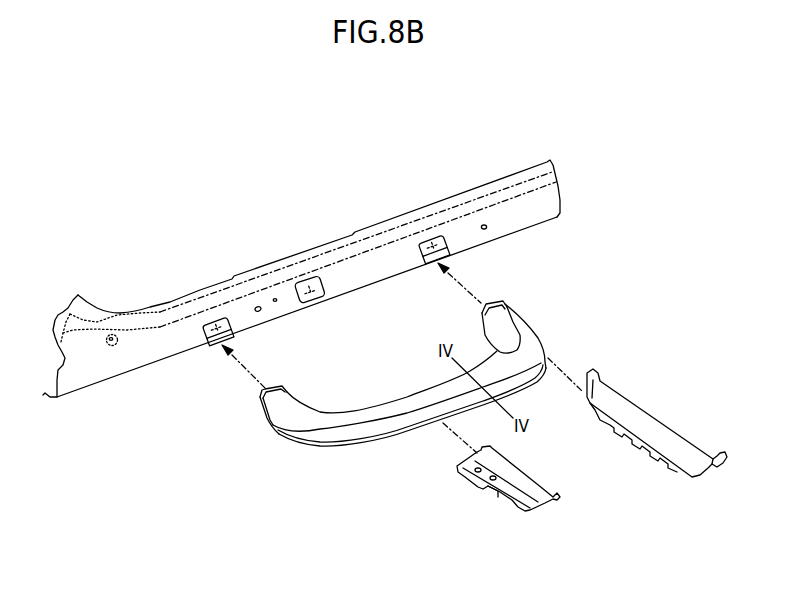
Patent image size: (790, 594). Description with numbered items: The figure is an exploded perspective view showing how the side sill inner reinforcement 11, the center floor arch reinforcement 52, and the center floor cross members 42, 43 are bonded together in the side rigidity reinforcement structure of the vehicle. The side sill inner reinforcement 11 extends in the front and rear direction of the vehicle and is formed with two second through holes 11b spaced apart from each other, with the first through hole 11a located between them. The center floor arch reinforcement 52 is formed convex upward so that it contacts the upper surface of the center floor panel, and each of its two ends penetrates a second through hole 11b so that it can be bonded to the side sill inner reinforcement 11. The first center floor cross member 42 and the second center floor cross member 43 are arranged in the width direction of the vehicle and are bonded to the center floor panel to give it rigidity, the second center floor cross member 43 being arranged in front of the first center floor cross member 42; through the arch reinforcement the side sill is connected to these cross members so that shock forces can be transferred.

The side sill inner reinforcement 11 is at (552, 202).
The first through hole 11a is at (314, 280).
The second through hole 11b is at (213, 320).
The center floor arch reinforcement 52 is at (363, 435).
The first center floor cross member 42 is at (510, 495).
The second center floor cross member 43 is at (663, 458).